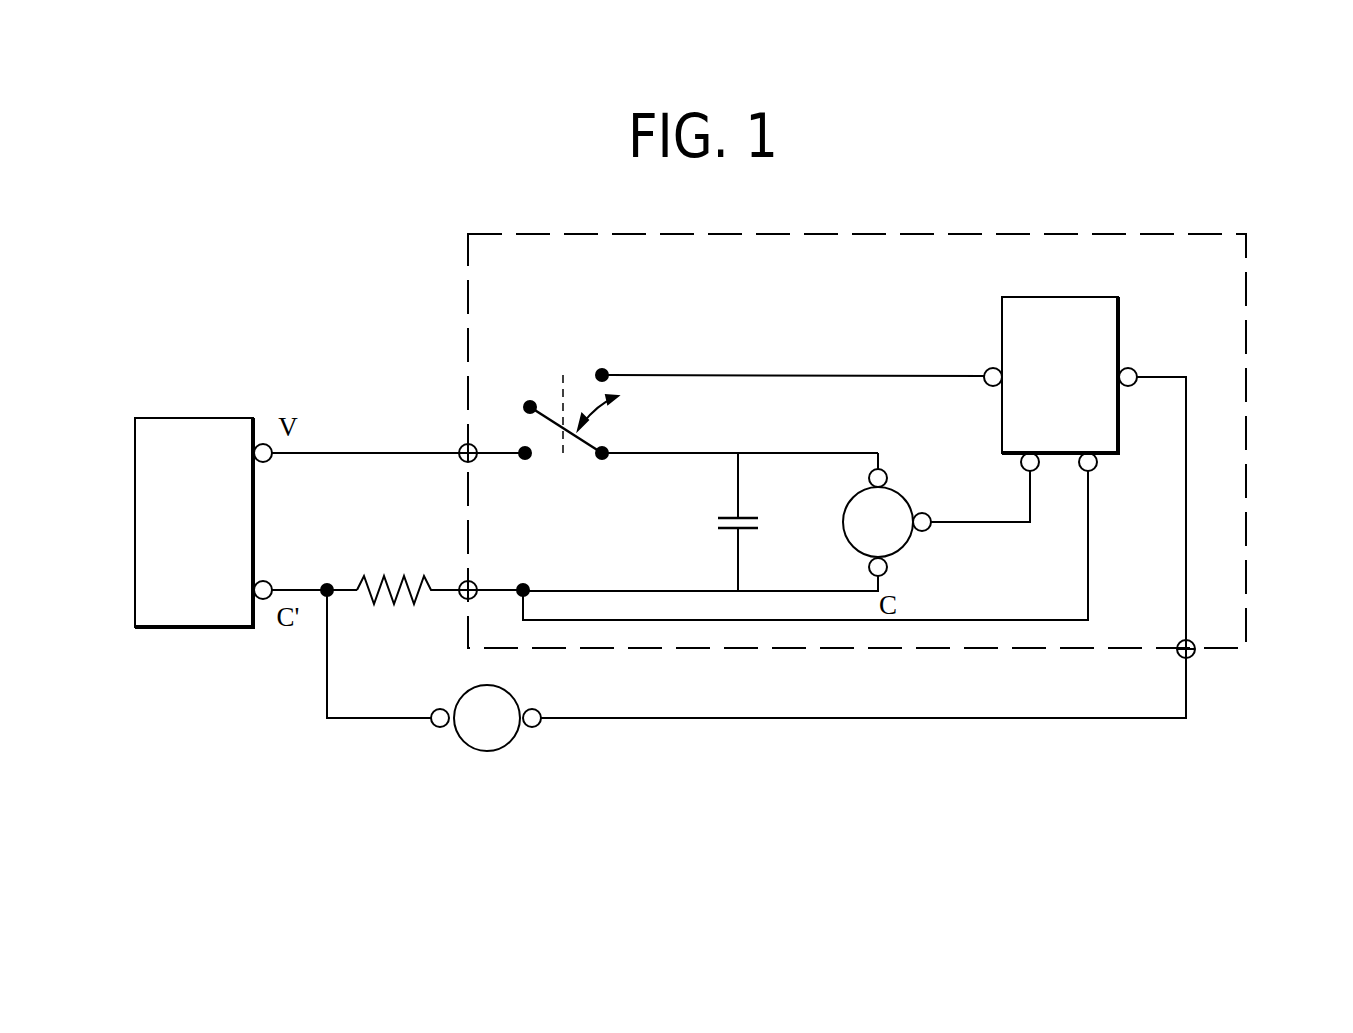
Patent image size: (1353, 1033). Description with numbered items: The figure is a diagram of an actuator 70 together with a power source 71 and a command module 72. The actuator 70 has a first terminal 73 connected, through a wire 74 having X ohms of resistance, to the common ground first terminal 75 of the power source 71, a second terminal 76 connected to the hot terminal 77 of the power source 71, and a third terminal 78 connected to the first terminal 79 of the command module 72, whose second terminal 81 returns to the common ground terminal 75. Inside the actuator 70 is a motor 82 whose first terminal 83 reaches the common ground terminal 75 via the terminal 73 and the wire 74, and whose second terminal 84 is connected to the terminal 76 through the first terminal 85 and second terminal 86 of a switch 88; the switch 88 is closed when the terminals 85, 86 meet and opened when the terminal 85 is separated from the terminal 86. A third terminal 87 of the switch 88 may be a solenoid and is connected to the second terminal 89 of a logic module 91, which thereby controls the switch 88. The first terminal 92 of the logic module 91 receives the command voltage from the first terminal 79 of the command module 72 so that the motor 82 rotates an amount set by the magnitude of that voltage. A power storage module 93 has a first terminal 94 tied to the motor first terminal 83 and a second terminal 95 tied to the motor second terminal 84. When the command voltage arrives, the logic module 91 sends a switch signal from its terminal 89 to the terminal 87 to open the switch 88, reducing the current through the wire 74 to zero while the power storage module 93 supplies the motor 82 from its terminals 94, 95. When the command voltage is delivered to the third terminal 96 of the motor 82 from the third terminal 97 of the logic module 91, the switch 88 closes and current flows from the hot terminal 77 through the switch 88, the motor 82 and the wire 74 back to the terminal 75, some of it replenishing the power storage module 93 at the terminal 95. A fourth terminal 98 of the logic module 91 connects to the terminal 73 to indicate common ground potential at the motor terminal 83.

The actuator 70 is at (468, 298).
The power source 71 is at (200, 418).
The command module 72 is at (487, 751).
The first terminal of actuator 73 is at (476, 584).
The wire 74 is at (388, 607).
The common ground first terminal of power source 75 is at (270, 583).
The second terminal of actuator 76 is at (462, 447).
The hot terminal of power source 77 is at (270, 460).
The third terminal of actuator 78 is at (1178, 643).
The first terminal of command module 79 is at (535, 727).
The second terminal of command module 81 is at (438, 727).
The motor 82 is at (853, 505).
The first terminal of motor 83 is at (886, 572).
The second terminal of motor 84 is at (886, 473).
The first terminal of switch 85 is at (531, 402).
The second terminal of switch 86 is at (526, 460).
The third terminal of switch 87 is at (607, 370).
The switch 88 is at (640, 416).
The second terminal of logic module 89 is at (990, 386).
The logic module 91 is at (1002, 312).
The first terminal of logic module 92 is at (1132, 386).
The power storage module 93 is at (772, 520).
The first terminal of power storage module 94 is at (738, 556).
The second terminal of power storage module 95 is at (738, 483).
The third terminal of motor 96 is at (928, 530).
The third terminal of logic module 97 is at (1023, 470).
The fourth terminal of logic module 98 is at (1095, 470).